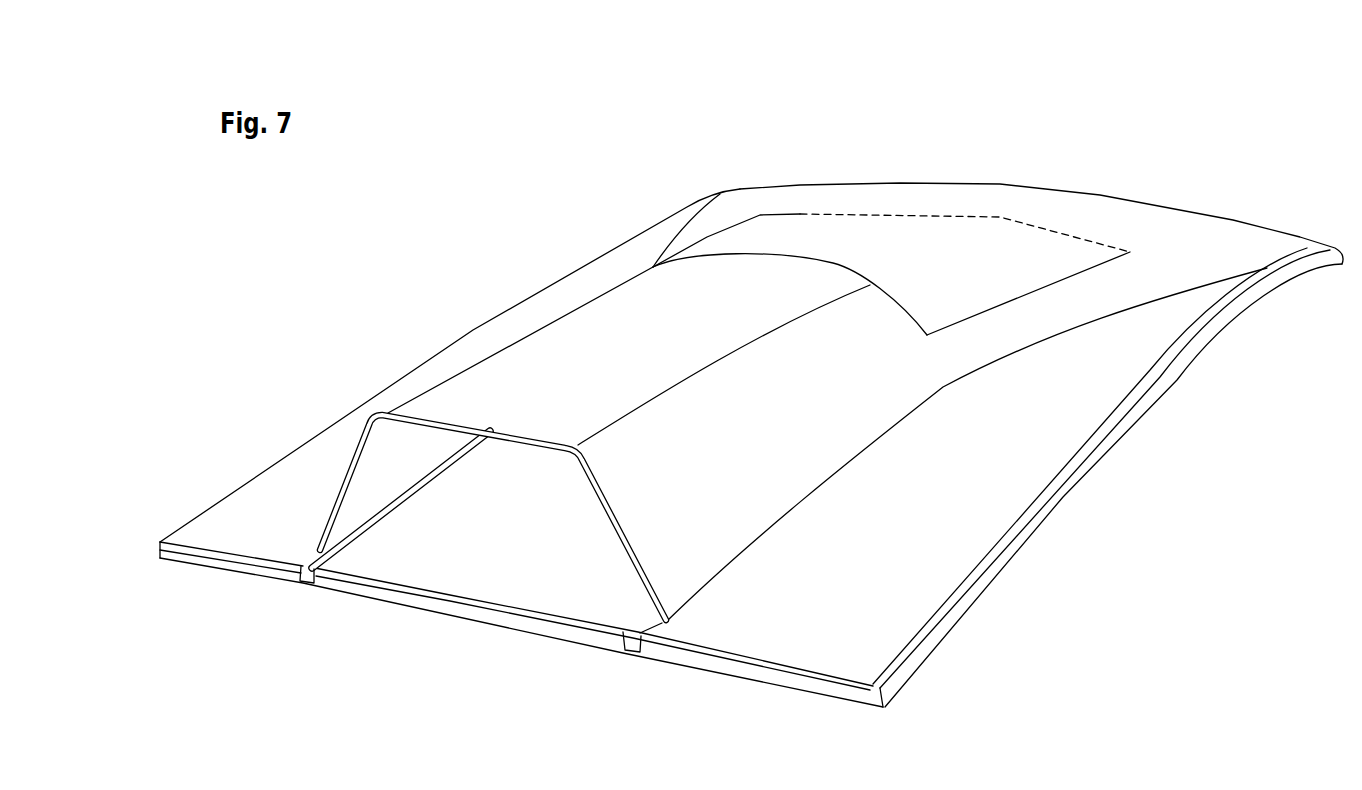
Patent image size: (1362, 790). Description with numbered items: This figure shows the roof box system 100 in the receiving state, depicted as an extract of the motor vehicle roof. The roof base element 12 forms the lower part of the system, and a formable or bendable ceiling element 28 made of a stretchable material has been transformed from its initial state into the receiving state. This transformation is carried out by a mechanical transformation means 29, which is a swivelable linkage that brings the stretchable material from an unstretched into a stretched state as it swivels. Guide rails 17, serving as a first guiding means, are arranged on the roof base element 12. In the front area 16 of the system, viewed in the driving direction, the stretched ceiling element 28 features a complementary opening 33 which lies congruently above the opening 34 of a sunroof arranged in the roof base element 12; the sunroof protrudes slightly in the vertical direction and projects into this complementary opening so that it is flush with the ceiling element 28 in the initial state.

The roof box system 100 is at (214, 282).
The roof base element 12 is at (523, 560).
The front area 16 is at (1160, 135).
The guide rails 17 is at (307, 583).
The ceiling element 28 is at (570, 345).
The mechanical transformation means 29 is at (363, 432).
The complementary opening 33 is at (813, 227).
The opening 34 is at (903, 275).